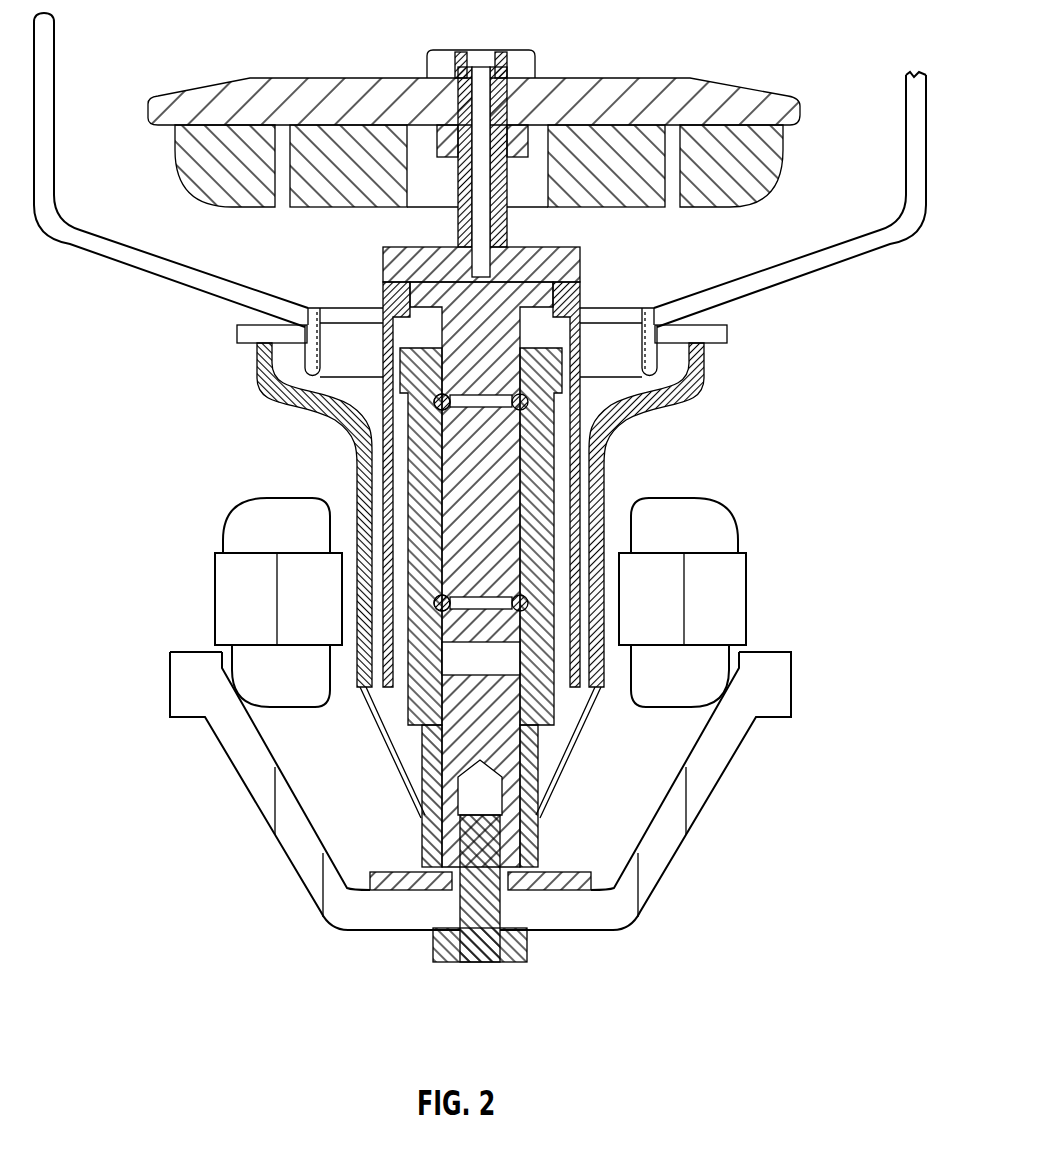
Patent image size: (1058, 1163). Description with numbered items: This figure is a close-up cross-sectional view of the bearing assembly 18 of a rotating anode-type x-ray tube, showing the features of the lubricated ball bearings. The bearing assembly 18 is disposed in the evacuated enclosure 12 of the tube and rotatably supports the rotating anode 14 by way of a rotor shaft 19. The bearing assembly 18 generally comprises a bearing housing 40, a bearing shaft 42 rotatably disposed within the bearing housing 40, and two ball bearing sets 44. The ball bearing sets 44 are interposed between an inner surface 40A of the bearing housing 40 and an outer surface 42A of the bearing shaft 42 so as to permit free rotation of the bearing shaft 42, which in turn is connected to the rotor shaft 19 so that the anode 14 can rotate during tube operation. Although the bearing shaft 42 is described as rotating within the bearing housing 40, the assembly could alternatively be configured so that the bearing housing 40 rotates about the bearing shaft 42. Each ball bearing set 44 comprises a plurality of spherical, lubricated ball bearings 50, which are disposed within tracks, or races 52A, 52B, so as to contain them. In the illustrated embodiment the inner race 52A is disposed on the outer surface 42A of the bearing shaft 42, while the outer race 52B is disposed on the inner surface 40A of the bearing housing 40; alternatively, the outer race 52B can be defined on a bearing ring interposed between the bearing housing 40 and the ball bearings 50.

The evacuated enclosure 12 is at (605, 540).
The rotating anode 14 is at (672, 65).
The bearing assembly 18 is at (400, 415).
The rotor shaft 19 is at (510, 222).
The bearing housing 40 is at (552, 400).
The inner surface 40A is at (532, 445).
The bearing shaft 42 is at (305, 329).
The outer surface 42A is at (382, 358).
The ball bearing set 44 is at (500, 384).
The lubricated ball bearing 50 is at (438, 406).
The inner race 52A is at (455, 412).
The outer race 52B is at (528, 400).